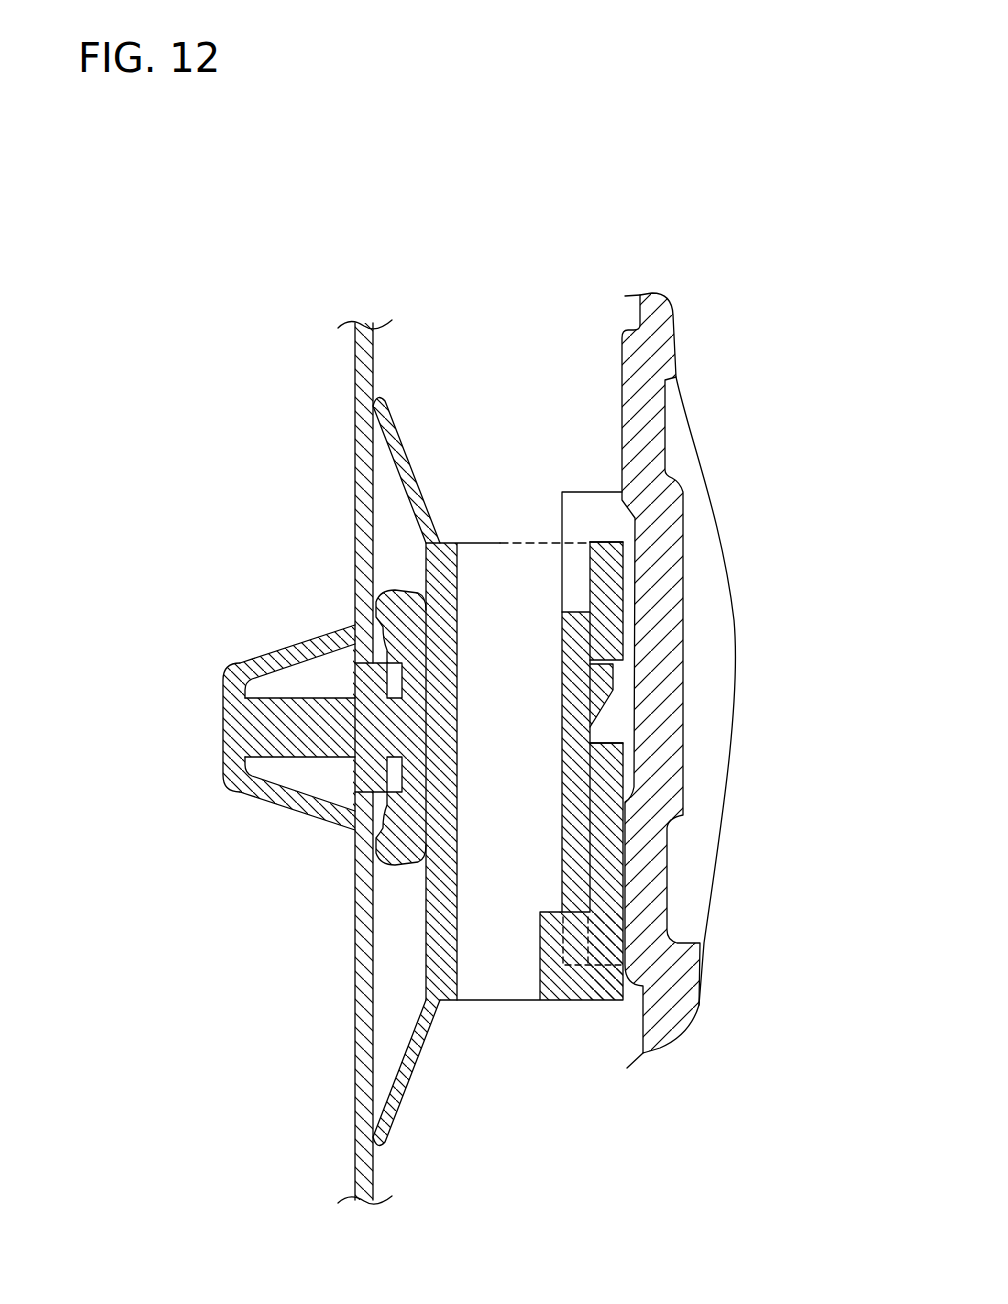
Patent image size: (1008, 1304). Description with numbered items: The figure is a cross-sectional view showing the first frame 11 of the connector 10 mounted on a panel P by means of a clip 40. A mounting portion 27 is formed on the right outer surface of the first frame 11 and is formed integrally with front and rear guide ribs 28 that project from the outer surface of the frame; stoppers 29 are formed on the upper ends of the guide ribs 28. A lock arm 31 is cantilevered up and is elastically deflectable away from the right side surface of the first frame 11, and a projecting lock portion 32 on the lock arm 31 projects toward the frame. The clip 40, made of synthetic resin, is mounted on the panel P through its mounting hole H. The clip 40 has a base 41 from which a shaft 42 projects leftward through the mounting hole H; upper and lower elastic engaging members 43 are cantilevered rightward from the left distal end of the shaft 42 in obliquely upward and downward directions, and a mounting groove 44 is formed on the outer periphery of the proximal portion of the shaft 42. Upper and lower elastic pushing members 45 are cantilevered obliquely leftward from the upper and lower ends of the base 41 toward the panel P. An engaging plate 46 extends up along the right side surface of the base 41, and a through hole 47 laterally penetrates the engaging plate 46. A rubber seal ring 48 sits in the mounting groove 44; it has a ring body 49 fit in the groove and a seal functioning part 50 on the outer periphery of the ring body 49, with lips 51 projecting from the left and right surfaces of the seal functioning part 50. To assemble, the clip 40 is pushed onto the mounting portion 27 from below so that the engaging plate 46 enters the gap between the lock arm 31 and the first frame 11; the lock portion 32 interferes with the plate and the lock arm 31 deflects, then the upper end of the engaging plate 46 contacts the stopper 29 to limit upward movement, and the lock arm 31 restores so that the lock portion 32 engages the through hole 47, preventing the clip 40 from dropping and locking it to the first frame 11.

The connector 10 is at (598, 212).
The first frame 11 is at (635, 352).
The mounting portion 27 is at (562, 446).
The guide ribs 28 is at (567, 577).
The stoppers 29 is at (610, 530).
The lock arm 31 is at (570, 632).
The lock portion 32 is at (605, 682).
The clip 40 is at (248, 602).
The base 41 is at (432, 952).
The shaft 42 is at (288, 740).
The elastic engaging members 43 is at (328, 631).
The mounting groove 44 is at (240, 663).
The elastic pushing members 45 is at (393, 433).
The engaging plate 46 is at (612, 598).
The through hole 47 is at (608, 743).
The seal ring 48 is at (618, 841).
The ring body 49 is at (400, 784).
The seal functioning part 50 is at (402, 836).
The lips 51 is at (375, 603).
The panel P is at (360, 1108).
The mounting hole H is at (352, 784).